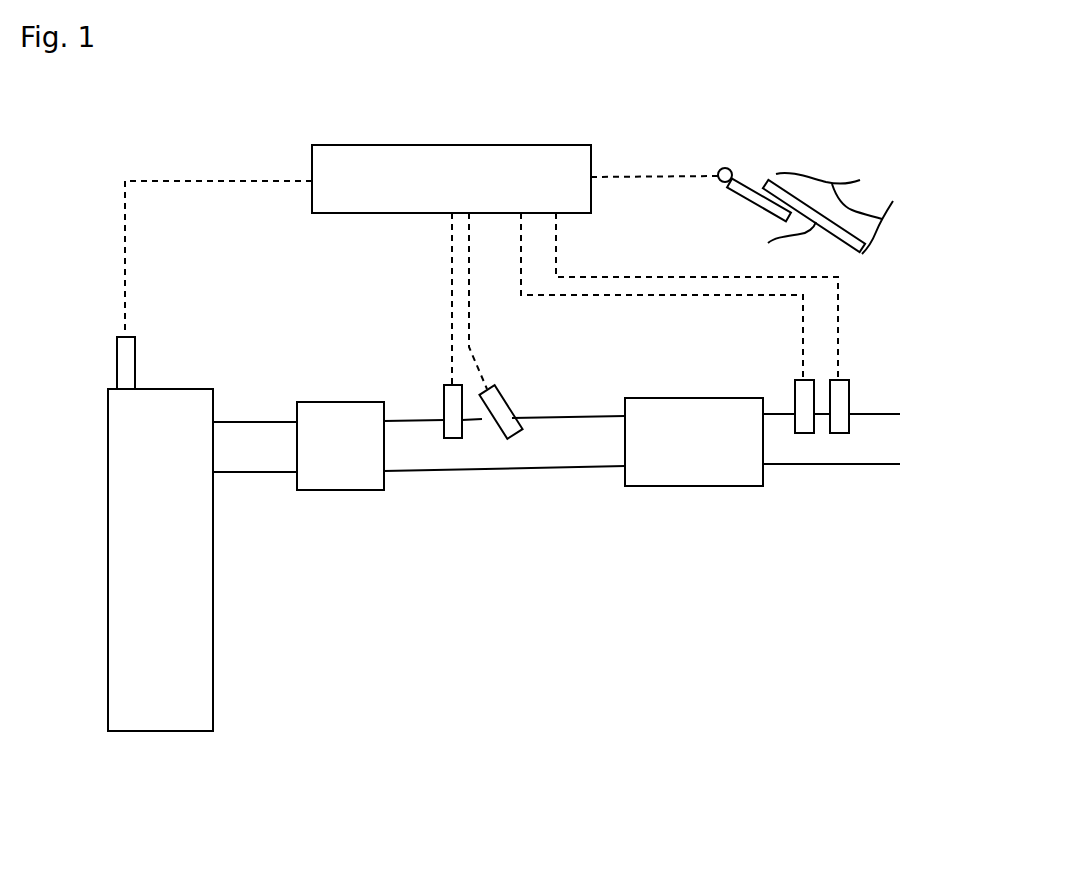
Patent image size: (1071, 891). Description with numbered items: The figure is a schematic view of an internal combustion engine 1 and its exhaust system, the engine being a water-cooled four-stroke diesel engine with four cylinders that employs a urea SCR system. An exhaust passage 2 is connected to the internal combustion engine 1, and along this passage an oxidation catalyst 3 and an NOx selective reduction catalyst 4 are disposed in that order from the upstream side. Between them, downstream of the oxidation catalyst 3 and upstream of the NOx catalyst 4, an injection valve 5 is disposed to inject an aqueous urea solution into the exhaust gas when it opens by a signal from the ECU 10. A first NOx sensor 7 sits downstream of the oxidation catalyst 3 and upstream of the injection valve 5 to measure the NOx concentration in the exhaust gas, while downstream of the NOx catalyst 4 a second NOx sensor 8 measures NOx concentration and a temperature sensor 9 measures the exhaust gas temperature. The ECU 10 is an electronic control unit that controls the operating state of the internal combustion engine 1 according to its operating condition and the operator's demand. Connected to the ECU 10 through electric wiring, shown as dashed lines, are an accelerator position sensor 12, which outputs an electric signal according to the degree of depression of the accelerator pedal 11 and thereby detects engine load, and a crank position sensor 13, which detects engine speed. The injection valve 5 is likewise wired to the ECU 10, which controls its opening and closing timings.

The internal combustion engine 1 is at (213, 658).
The exhaust passage 2 is at (432, 472).
The oxidation catalyst 3 is at (346, 490).
The NOx selective reduction catalyst 4 is at (700, 486).
The injection valve 5 is at (498, 390).
The first NOx sensor 7 is at (444, 398).
The second NOx sensor 8 is at (795, 398).
The temperature sensor 9 is at (849, 398).
The ECU 10 is at (320, 213).
The accelerator pedal 11 is at (819, 221).
The accelerator position sensor 12 is at (718, 182).
The crank position sensor 13 is at (117, 362).